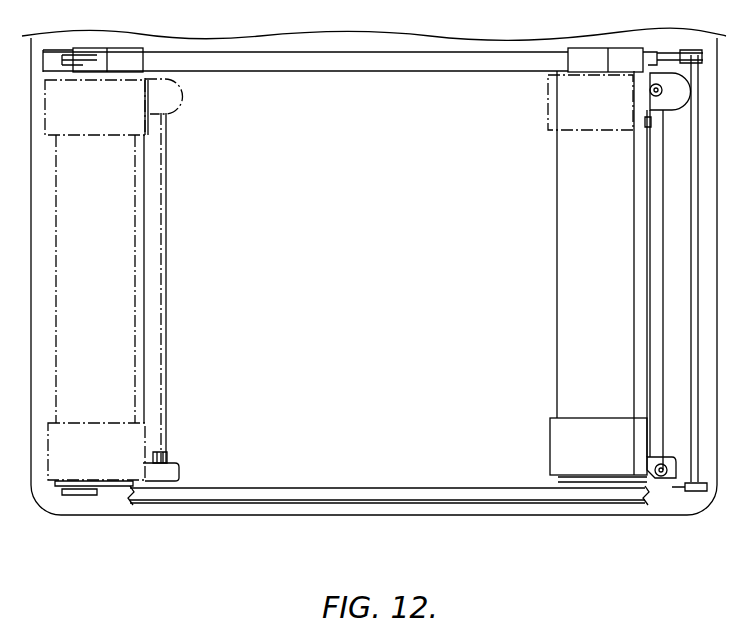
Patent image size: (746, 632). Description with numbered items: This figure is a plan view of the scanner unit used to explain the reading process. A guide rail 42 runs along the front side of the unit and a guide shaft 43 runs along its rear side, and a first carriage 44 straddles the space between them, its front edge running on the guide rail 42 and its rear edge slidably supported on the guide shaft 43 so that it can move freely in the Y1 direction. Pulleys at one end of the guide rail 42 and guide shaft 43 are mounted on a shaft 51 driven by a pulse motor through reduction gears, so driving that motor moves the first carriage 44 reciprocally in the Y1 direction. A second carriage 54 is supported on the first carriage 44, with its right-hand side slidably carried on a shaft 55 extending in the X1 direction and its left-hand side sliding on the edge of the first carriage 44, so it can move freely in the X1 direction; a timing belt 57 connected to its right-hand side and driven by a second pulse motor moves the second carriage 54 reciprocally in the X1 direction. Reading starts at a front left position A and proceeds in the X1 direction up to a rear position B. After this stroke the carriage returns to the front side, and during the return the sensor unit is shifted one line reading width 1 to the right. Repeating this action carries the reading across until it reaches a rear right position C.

The line reading width 1 is at (698, 508).
The guide rail 42 is at (362, 490).
The guide shaft 43 is at (383, 62).
The first carriage 44 is at (120, 366).
The shaft 51 is at (690, 178).
The second carriage 54 is at (152, 108).
The shaft 55 is at (645, 370).
The timing belt 57 is at (660, 158).
The front left position A is at (120, 465).
The rear position B is at (154, 122).
The rear right position C is at (546, 87).
The X1 direction X1 is at (529, 176).
The Y1 direction Y1 is at (412, 266).